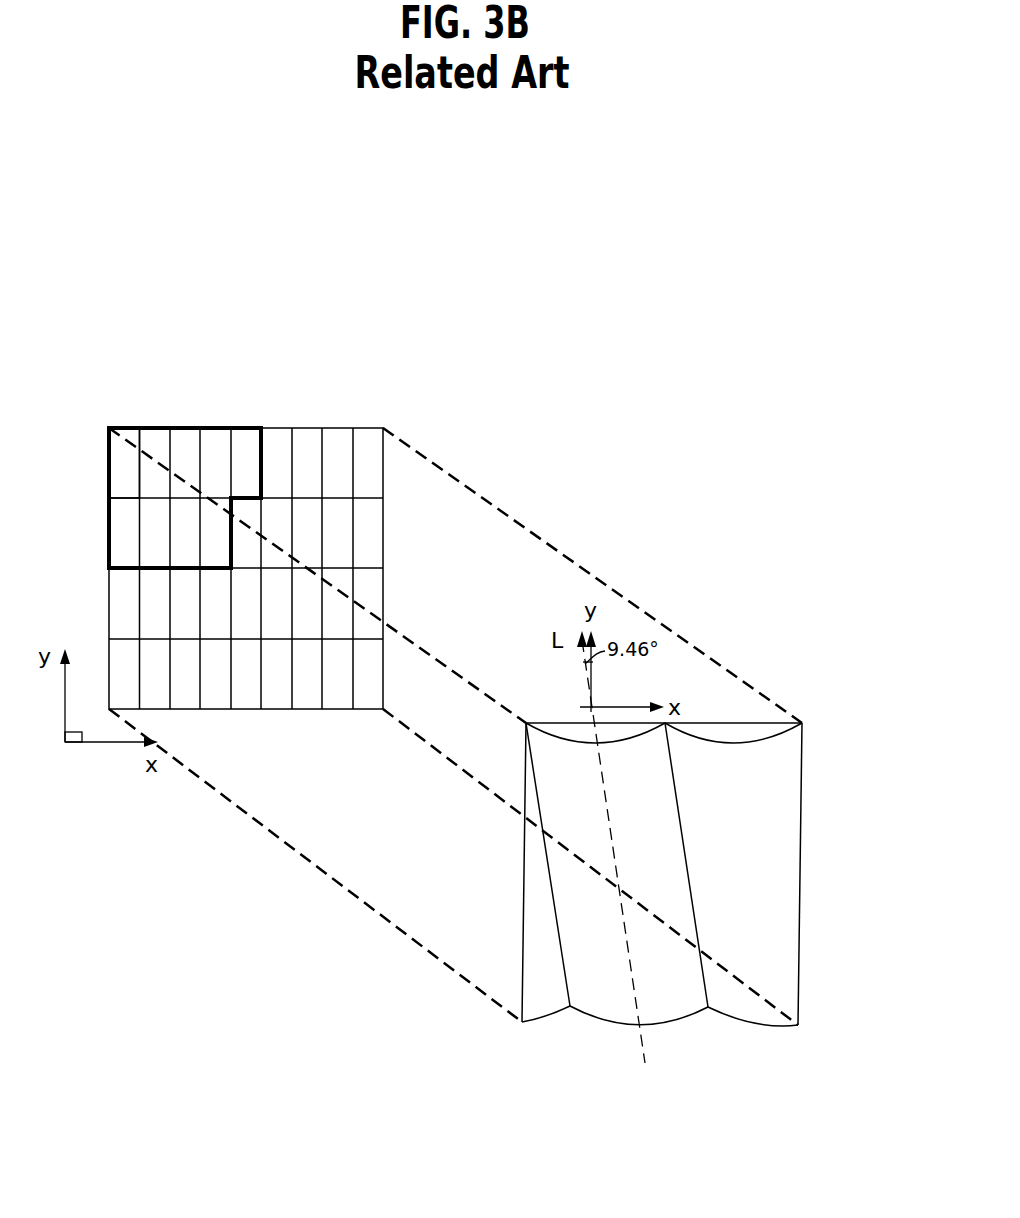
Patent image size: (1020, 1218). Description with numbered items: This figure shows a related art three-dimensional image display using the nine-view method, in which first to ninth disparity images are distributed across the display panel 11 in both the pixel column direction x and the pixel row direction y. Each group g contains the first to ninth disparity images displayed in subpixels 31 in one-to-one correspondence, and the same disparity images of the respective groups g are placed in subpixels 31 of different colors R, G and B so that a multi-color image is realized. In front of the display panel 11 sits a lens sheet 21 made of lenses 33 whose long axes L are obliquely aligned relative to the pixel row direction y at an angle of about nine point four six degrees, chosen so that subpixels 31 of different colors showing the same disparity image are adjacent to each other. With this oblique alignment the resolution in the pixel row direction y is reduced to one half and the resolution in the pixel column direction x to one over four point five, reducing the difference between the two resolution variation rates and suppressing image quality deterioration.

The display panel 11 is at (259, 546).
The lenticular lens sheet 21 is at (698, 849).
The subpixel 31 is at (118, 478).
The lenticular lens 33 is at (803, 780).
The group g is at (107, 438).